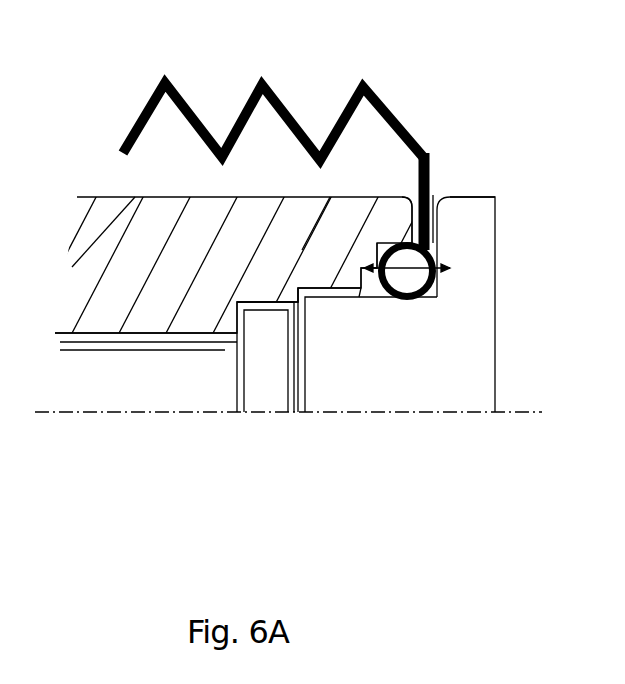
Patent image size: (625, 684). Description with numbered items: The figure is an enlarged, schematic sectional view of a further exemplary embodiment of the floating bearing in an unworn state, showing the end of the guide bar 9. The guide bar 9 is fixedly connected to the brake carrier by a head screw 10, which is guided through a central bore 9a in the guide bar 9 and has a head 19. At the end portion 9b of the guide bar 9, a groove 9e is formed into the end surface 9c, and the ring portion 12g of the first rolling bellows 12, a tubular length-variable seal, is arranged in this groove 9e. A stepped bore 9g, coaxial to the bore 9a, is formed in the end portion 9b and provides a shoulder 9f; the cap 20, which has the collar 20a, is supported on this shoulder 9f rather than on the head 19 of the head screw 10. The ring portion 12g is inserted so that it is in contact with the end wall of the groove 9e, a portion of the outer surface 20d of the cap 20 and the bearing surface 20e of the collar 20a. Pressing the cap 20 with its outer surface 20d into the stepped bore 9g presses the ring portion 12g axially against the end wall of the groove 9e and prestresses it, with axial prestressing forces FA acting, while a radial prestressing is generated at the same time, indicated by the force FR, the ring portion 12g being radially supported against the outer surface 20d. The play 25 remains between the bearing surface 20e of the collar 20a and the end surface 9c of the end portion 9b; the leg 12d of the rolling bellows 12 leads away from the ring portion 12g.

The guide bar 9 is at (97, 210).
The central bore 9a is at (112, 338).
The end portion 9b is at (303, 243).
The end surface 9c is at (362, 262).
The groove 9e is at (374, 252).
The shoulder 9f is at (283, 293).
The stepped bore 9g is at (318, 300).
The head screw 10 is at (192, 385).
The first rolling bellows 12 is at (372, 100).
The leg of spring element 12d is at (432, 178).
The ring portion 12g is at (481, 296).
The head 19 is at (257, 372).
The cap 20 is at (467, 383).
The collar 20a is at (478, 215).
The outer surface 20d is at (383, 300).
The bearing surface 20e is at (440, 243).
The play 25 is at (496, 193).
The axial prestressing forces FA is at (419, 279).
The radial force FR is at (359, 300).